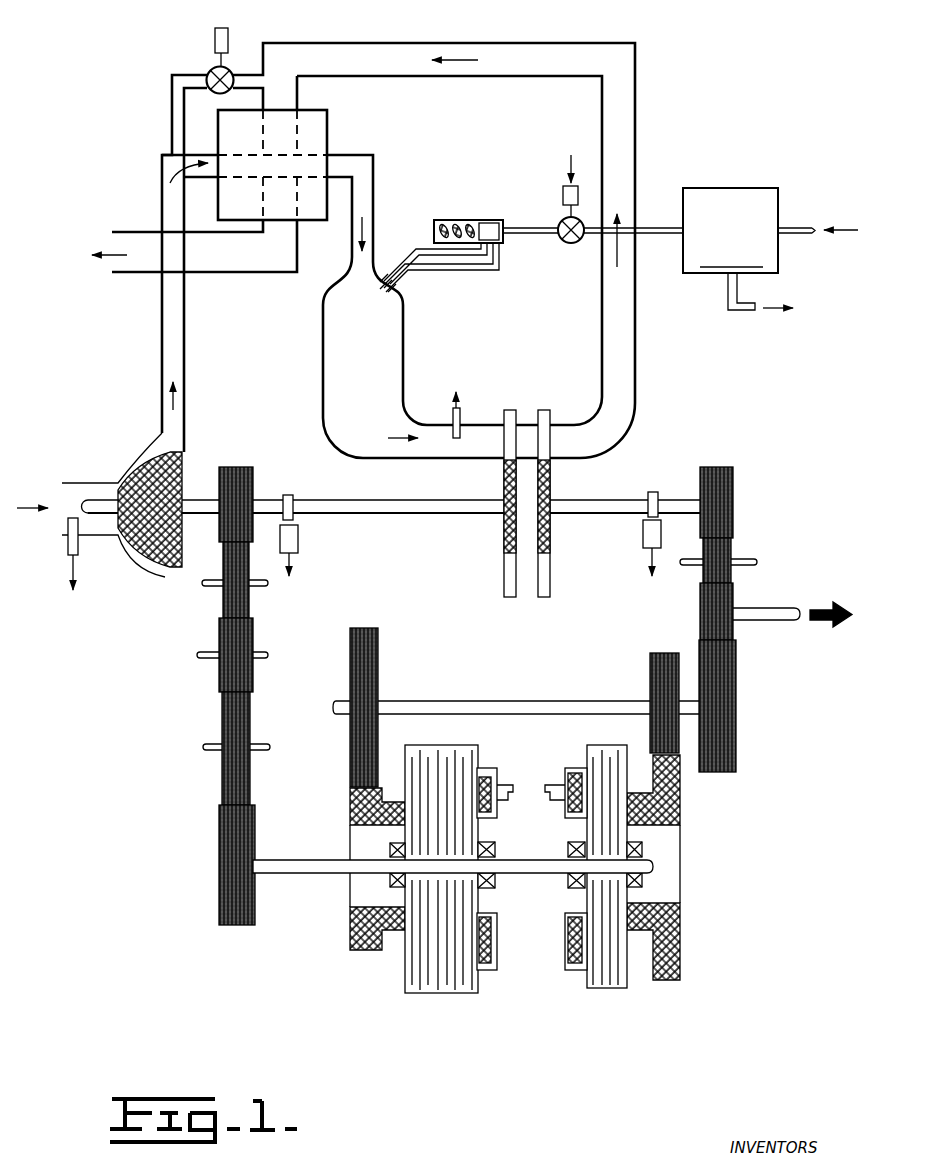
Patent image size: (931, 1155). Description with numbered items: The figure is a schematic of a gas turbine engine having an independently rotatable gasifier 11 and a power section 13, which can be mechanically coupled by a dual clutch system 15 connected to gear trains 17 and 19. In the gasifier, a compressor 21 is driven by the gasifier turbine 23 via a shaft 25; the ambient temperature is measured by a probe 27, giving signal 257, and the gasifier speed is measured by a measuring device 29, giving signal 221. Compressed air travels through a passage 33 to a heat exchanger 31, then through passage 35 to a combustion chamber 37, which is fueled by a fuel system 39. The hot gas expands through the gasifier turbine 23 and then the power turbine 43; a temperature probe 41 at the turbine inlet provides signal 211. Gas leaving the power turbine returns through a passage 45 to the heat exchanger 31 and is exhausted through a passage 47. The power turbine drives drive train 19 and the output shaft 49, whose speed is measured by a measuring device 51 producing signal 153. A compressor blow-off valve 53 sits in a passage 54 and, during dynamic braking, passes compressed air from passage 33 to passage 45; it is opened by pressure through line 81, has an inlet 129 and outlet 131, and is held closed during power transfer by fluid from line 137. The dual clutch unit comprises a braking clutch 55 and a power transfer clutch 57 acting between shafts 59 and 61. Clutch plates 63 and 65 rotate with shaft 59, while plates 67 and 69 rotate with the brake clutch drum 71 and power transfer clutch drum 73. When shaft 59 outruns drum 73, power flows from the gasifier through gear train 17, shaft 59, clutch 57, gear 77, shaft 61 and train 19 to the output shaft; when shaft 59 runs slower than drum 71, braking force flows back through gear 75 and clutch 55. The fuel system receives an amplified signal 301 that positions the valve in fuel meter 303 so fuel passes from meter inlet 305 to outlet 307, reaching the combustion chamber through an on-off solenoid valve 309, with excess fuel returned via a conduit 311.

The gasifier 11 is at (418, 524).
The power section 13 is at (659, 438).
The dual clutch system 15 is at (516, 668).
The gear train 17 is at (200, 703).
The gear train 19 is at (758, 718).
The compressor 21 is at (183, 463).
The gasifier turbine 23 is at (510, 548).
The shaft 25 is at (355, 500).
The probe 27 is at (79, 546).
The measuring device 29 is at (296, 543).
The heat exchanger 31 is at (322, 128).
The passage 33 is at (186, 352).
The passage 35 is at (378, 185).
The combustion chamber 37 is at (378, 361).
The fuel system 39 is at (570, 248).
The temperature probe 41 is at (461, 410).
The power turbine 43 is at (551, 480).
The passage 45 is at (528, 76).
The passage 47 is at (148, 272).
The output shaft 49 is at (748, 610).
The measuring device 51 is at (643, 531).
The compressor blow-off valve 53 is at (182, 117).
The passage 54 is at (172, 95).
The braking clutch 55 is at (428, 878).
The power transfer clutch 57 is at (639, 875).
The shaft 59 is at (276, 860).
The shaft 61 is at (396, 700).
The clutch plates 63 is at (414, 967).
The clutch plates 65 is at (623, 970).
The clutch plates 67 is at (485, 742).
The clutch plates 69 is at (587, 752).
The brake clutch drum 71 is at (440, 745).
The power transfer clutch drum 73 is at (590, 748).
The gear 75 is at (365, 630).
The gear 77 is at (658, 657).
The line 81 is at (503, 788).
The valve inlet 129 is at (210, 70).
The outlet 131 is at (232, 67).
The line 137 is at (553, 800).
The signal 153 is at (650, 580).
The signal 211 is at (460, 386).
The signal 221 is at (297, 578).
The signal 257 is at (78, 593).
The signal 301 is at (734, 184).
The fuel meter 303 is at (730, 230).
The meter inlet 305 is at (787, 226).
The outlet 307 is at (645, 226).
The on-off solenoid valve 309 is at (562, 220).
The conduit 311 is at (728, 291).